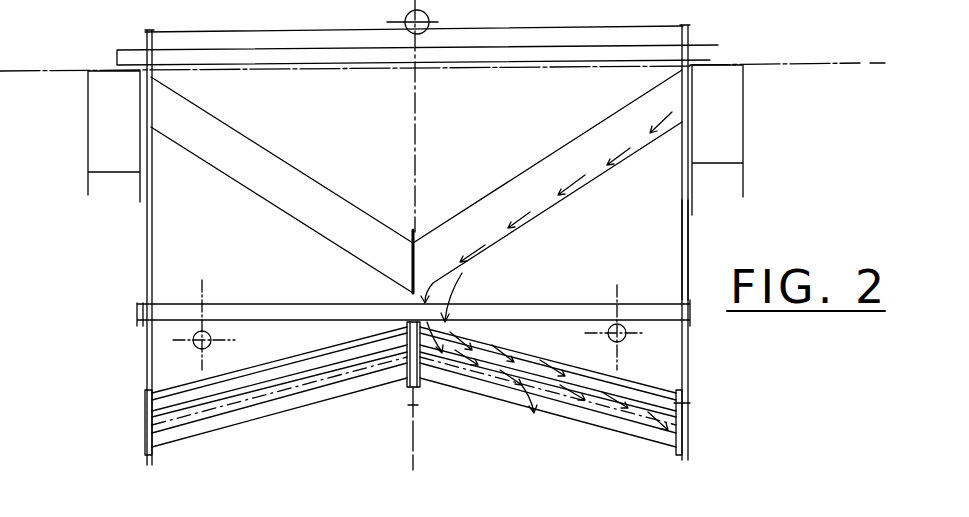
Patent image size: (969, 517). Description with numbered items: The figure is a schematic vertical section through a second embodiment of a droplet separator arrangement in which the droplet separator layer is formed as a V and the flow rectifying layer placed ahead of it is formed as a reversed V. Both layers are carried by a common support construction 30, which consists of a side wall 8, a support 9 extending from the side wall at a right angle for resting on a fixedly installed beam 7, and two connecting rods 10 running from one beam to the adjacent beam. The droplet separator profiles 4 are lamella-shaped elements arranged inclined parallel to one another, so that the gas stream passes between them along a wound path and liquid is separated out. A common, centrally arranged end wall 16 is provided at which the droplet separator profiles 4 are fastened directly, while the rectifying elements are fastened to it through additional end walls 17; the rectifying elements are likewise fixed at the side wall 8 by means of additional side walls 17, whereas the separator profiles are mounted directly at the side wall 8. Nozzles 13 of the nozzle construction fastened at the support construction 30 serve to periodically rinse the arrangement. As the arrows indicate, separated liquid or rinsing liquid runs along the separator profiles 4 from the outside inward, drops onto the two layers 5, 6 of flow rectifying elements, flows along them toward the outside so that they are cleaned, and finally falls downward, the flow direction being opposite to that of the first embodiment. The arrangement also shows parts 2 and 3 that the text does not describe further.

The left trough section 2 is at (326, 397).
The inclined chute wall 3 is at (525, 178).
The droplet separator profiles 4 is at (592, 178).
The layer of flow rectifying elements 5 is at (531, 363).
The layer of flow rectifying elements 6 is at (505, 388).
The beam 7 is at (113, 165).
The side wall 8 is at (690, 214).
The support 9 is at (703, 62).
The connecting rod 10 is at (457, 62).
The nozzles 13 is at (214, 344).
The centrally arranged end wall 16 is at (410, 242).
The additional end walls / additional side walls 17 is at (427, 383).
The common support construction 30 is at (688, 265).